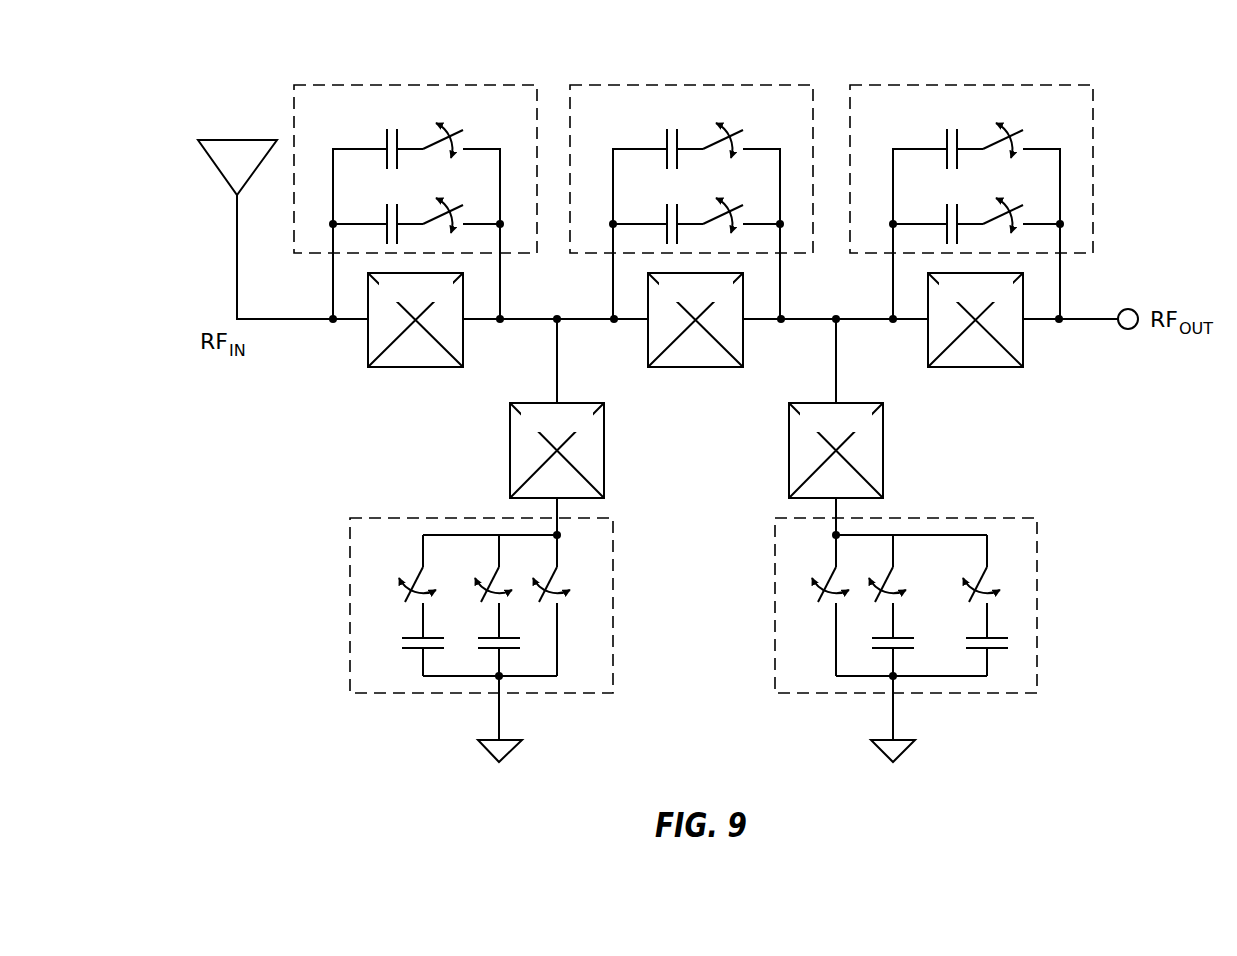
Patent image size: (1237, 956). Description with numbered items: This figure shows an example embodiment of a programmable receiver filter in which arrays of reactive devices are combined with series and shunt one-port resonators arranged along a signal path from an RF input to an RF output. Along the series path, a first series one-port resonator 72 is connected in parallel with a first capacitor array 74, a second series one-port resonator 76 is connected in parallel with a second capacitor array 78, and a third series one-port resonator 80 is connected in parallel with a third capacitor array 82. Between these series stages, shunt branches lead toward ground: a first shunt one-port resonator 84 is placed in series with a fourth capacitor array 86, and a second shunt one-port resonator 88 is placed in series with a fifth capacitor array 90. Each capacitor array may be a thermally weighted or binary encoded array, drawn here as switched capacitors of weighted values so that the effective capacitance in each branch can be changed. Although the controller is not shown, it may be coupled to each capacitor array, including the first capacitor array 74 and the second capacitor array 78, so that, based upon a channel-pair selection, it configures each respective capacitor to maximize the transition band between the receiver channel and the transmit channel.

The first series one-port resonator 72 is at (406, 368).
The first capacitor array 74 is at (337, 118).
The second series one-port resonator 76 is at (692, 368).
The second capacitor array 78 is at (613, 118).
The third series one-port resonator 80 is at (990, 368).
The third capacitor array 82 is at (893, 118).
The first shunt one-port resonator 84 is at (510, 443).
The fourth capacitor array 86 is at (602, 692).
The second shunt one-port resonator 88 is at (884, 450).
The fifth capacitor array 90 is at (1027, 692).